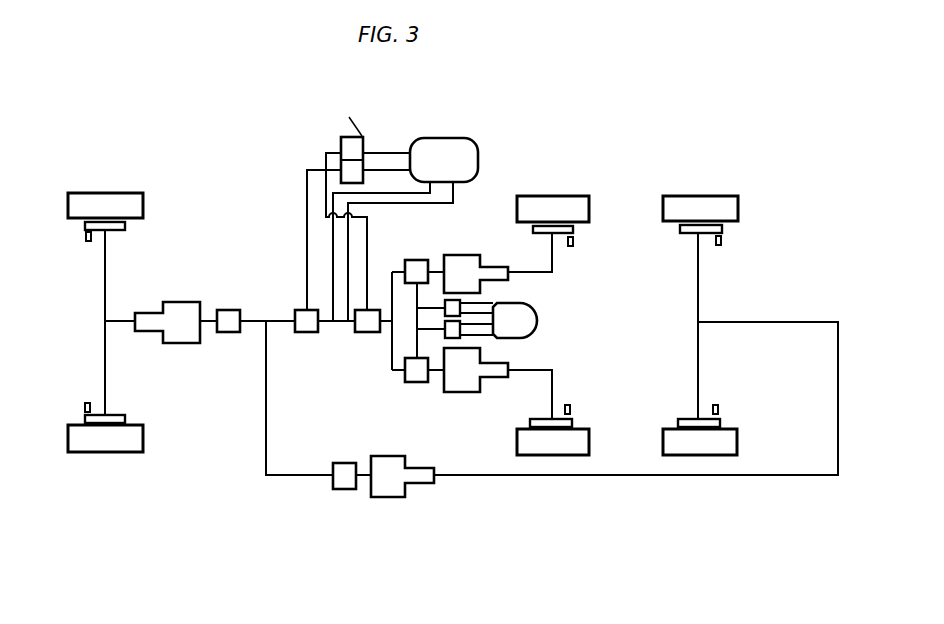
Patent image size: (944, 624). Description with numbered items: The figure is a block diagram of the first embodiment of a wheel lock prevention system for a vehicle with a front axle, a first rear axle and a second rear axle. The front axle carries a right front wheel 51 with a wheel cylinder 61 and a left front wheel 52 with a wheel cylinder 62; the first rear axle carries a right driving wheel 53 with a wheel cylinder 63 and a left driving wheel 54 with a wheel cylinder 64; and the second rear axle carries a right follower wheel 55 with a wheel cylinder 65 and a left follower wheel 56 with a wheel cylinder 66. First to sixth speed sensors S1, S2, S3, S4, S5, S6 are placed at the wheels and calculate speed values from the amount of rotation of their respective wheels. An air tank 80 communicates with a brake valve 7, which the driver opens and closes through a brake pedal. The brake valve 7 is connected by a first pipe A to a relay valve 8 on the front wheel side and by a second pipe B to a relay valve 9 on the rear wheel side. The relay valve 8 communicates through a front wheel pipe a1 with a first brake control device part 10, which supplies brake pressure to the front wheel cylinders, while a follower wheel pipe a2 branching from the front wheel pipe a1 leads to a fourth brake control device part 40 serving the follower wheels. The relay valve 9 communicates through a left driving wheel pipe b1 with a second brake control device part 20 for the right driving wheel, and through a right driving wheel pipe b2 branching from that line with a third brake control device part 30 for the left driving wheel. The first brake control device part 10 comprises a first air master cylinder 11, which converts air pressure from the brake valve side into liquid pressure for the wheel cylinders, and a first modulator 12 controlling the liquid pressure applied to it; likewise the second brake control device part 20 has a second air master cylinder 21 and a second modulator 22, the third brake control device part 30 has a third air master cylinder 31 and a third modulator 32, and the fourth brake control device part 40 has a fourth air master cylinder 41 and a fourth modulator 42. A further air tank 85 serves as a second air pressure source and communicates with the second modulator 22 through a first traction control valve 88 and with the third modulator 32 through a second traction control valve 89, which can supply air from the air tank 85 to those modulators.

The brake valve 7 is at (353, 122).
The air tank 80 is at (445, 138).
The relay valve 8 is at (300, 308).
The relay valve 9 is at (360, 334).
The first brake control device part 10 is at (187, 316).
The first air master cylinder 11 is at (175, 338).
The first modulator 12 is at (228, 333).
The second brake control device part 20 is at (432, 395).
The second air master cylinder 21 is at (465, 385).
The second modulator 22 is at (412, 384).
The third brake control device part 30 is at (459, 226).
The third air master cylinder 31 is at (433, 257).
The third modulator 32 is at (407, 260).
The fourth brake control device part 40 is at (364, 508).
The fourth air master cylinder 41 is at (392, 490).
The fourth modulator 42 is at (340, 485).
The air tank 85 is at (540, 318).
The first traction control valve 88 is at (463, 340).
The second traction control valve 89 is at (463, 303).
The right front wheel 51 is at (102, 467).
The wheel cylinder 61 is at (90, 443).
The left front wheel 52 is at (104, 179).
The wheel cylinder 62 is at (90, 200).
The right driving wheel 53 is at (553, 491).
The wheel cylinder 63 is at (543, 447).
The left driving wheel 54 is at (567, 181).
The wheel cylinder 64 is at (560, 200).
The right follower wheel 55 is at (702, 491).
The wheel cylinder 65 is at (697, 447).
The left follower wheel 56 is at (710, 181).
The wheel cylinder 66 is at (700, 200).
The first speed sensor S1 is at (85, 406).
The second speed sensor S2 is at (85, 237).
The third speed sensor S3 is at (572, 407).
The fourth speed sensor S4 is at (573, 242).
The fifth speed sensor S5 is at (720, 407).
The sixth speed sensor S6 is at (722, 237).
The first pipe A is at (305, 197).
The second pipe B is at (328, 167).
The front wheel pipe a1 is at (250, 318).
The follower wheel pipe a2 is at (277, 477).
The left driving wheel pipe b1 is at (392, 358).
The right driving wheel pipe b2 is at (392, 290).